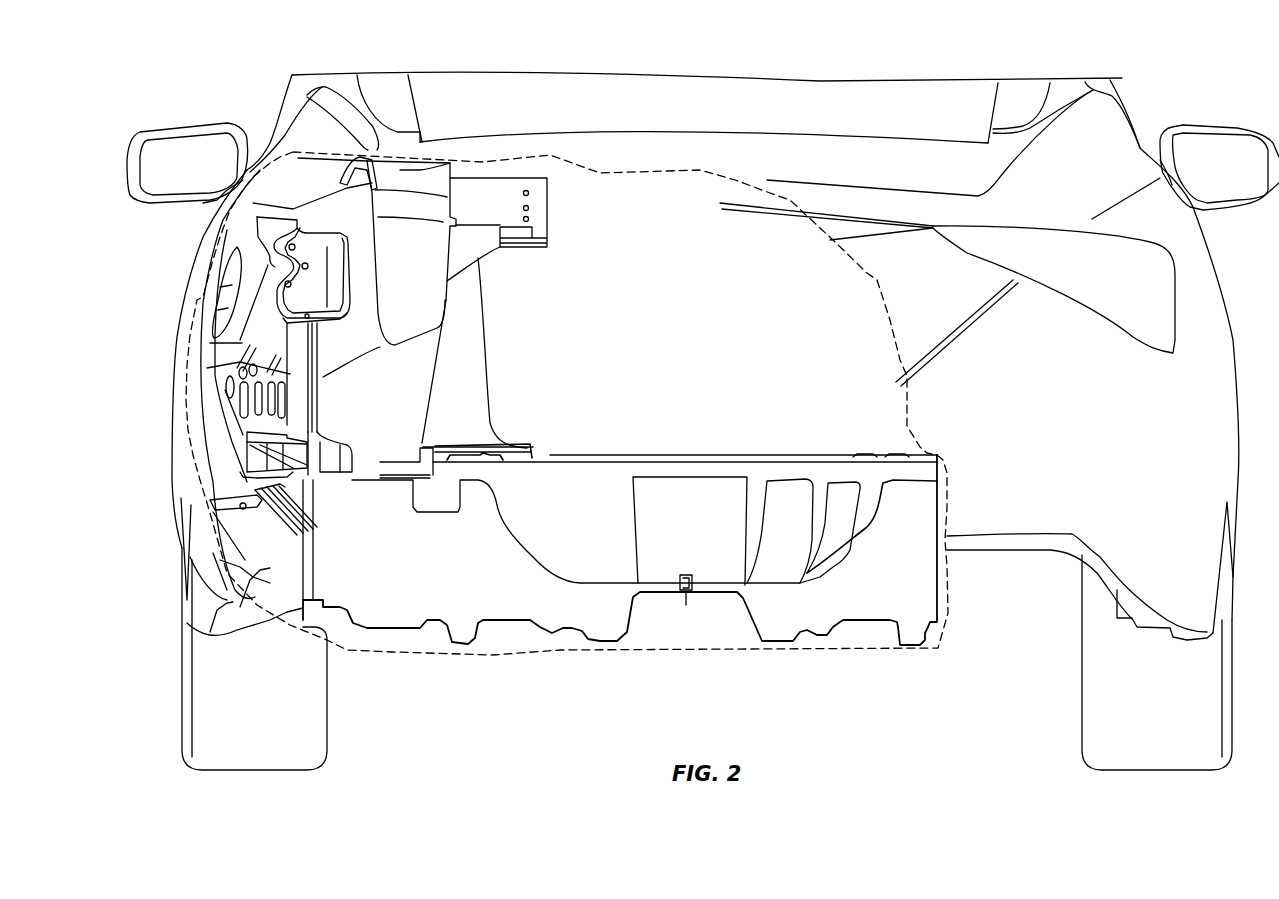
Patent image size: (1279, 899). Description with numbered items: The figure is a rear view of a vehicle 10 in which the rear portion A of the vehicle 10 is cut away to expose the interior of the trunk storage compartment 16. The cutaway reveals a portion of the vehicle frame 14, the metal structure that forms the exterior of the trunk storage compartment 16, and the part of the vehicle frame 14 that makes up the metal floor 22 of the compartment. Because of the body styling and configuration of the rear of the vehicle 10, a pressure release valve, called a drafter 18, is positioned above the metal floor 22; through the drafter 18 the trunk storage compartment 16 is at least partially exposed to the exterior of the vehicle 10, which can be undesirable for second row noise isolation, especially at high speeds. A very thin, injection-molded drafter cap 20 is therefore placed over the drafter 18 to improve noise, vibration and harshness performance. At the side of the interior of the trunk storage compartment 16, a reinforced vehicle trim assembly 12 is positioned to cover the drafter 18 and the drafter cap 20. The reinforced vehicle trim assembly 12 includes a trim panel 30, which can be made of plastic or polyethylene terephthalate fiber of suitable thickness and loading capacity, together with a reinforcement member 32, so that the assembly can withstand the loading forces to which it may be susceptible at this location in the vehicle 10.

The vehicle 10 is at (232, 68).
The reinforced vehicle trim assembly 12 is at (470, 368).
The vehicle frame 14 is at (297, 377).
The trunk storage compartment 16 is at (588, 217).
The drafter 18 is at (245, 452).
The drafter cap 20 is at (307, 470).
The metal floor 22 is at (527, 463).
The trim panel 30 is at (420, 257).
The reinforcement member 32 is at (326, 447).
The rear portion A is at (498, 150).